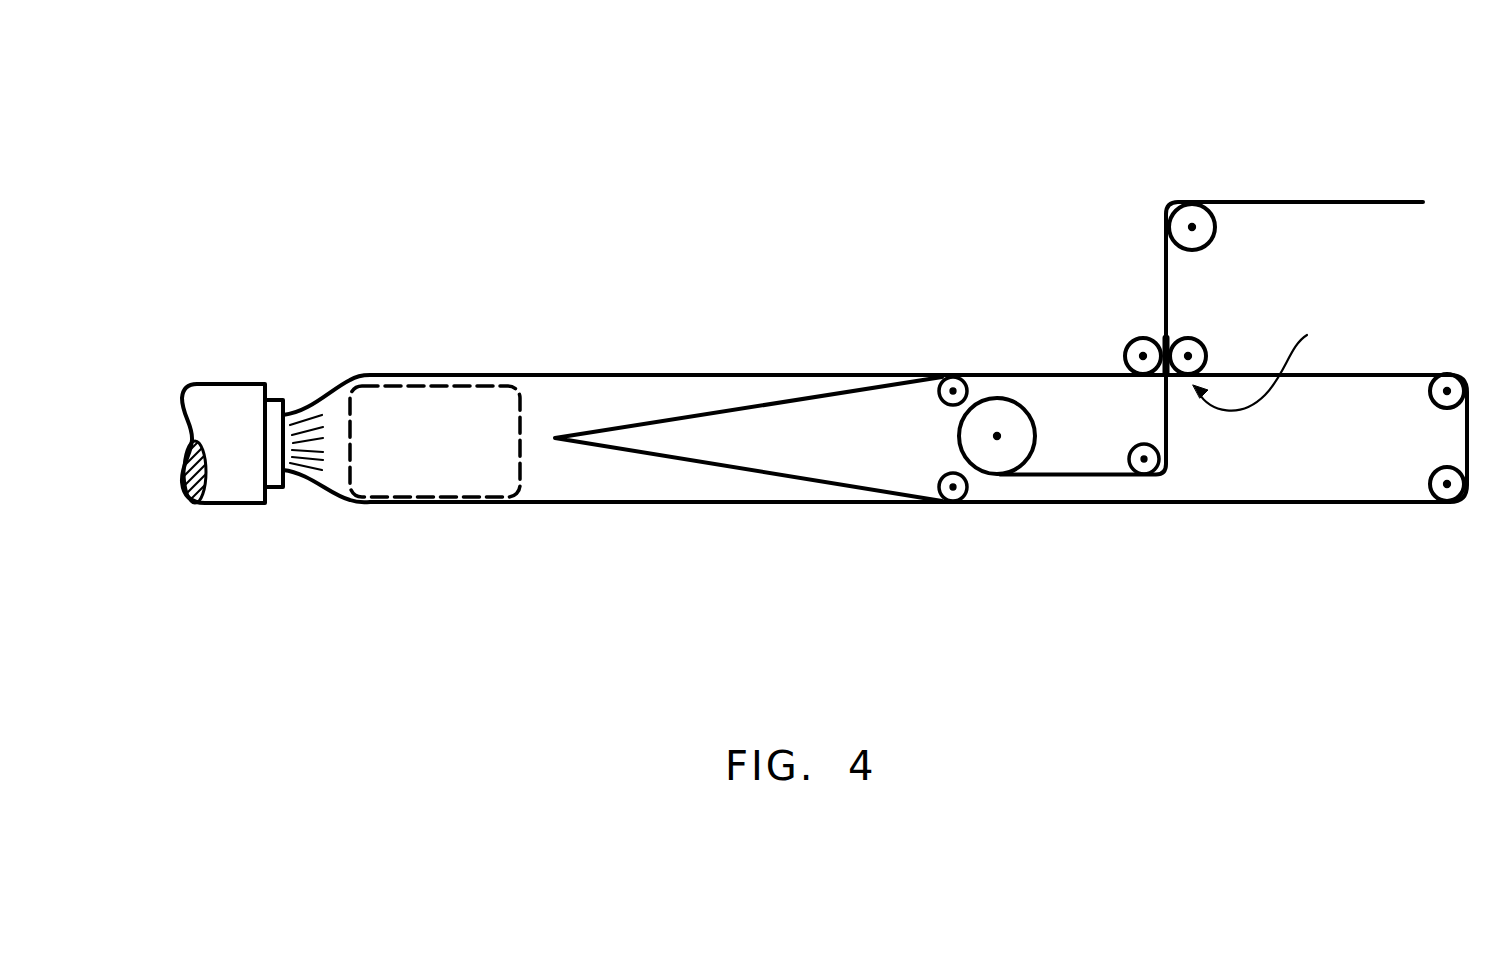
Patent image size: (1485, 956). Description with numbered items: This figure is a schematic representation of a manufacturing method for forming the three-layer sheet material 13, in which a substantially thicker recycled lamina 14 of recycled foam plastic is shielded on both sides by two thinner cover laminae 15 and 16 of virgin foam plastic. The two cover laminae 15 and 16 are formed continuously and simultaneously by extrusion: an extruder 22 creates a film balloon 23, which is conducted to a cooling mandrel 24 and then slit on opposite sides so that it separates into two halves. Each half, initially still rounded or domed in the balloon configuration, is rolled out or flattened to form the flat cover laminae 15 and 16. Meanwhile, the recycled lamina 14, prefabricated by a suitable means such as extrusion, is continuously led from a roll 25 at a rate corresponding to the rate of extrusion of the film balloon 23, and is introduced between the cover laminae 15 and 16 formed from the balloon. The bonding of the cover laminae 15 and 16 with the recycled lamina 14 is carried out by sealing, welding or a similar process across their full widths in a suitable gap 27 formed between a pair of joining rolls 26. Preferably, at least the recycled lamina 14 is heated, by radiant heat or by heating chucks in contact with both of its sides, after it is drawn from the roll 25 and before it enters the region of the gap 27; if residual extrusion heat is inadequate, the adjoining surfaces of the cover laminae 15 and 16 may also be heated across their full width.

The sheet material 13 is at (1345, 200).
The recycled lamina 14 is at (1120, 477).
The cover lamina 15 is at (1000, 377).
The cover lamina 16 is at (1387, 503).
The extruder 22 is at (232, 402).
The film balloon 23 is at (572, 505).
The cooling mandrel 24 is at (415, 480).
The roll 25 is at (1003, 478).
The joining rolls 26 is at (1135, 345).
The gap 27 is at (1267, 367).